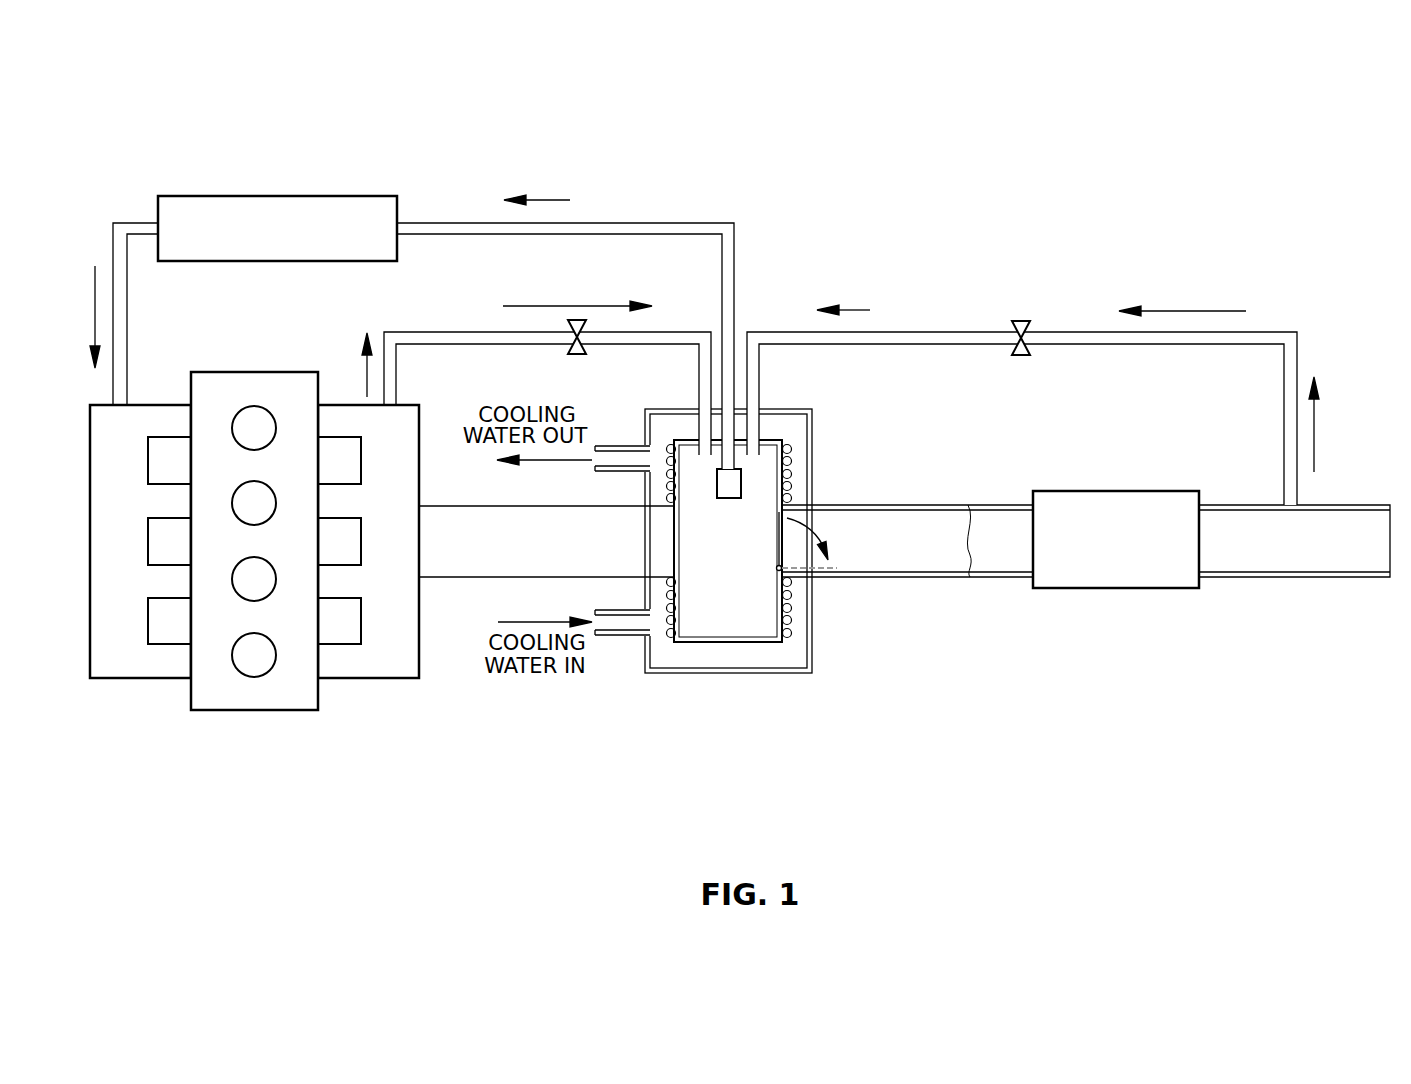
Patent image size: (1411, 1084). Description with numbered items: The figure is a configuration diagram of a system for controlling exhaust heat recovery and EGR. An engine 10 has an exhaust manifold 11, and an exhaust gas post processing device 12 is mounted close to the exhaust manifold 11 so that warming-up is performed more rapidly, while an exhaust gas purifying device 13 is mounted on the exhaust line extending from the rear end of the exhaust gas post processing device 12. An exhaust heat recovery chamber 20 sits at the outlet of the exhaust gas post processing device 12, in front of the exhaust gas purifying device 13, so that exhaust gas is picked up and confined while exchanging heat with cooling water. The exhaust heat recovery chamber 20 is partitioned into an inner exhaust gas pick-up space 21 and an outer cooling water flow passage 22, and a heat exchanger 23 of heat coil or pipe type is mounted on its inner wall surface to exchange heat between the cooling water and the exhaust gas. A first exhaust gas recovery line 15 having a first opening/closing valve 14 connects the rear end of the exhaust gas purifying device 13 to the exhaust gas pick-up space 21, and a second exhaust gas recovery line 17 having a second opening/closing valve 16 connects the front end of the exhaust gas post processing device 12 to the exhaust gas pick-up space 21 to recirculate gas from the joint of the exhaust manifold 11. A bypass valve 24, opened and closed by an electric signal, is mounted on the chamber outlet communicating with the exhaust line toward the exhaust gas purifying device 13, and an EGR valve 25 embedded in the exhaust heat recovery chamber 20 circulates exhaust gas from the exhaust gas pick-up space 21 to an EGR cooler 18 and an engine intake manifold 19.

The engine 10 is at (254, 608).
The exhaust manifold 11 is at (373, 667).
The exhaust gas post processing device 12 is at (455, 578).
The exhaust gas purifying device 13 is at (1113, 590).
The first opening/closing valve 14 is at (1021, 321).
The first exhaust gas recovery line 15 is at (1033, 365).
The second opening/closing valve 16 is at (568, 355).
The second exhaust gas recovery line 17 is at (536, 349).
The EGR cooler 18 is at (305, 195).
The engine intake manifold 19 is at (126, 667).
The exhaust heat recovery chamber 20 is at (748, 599).
The exhaust gas pick-up space 21 is at (752, 615).
The cooling water flow passage 22 is at (660, 655).
The heat exchanger 23 is at (792, 633).
The bypass valve 24 is at (780, 512).
The EGR valve 25 is at (737, 485).